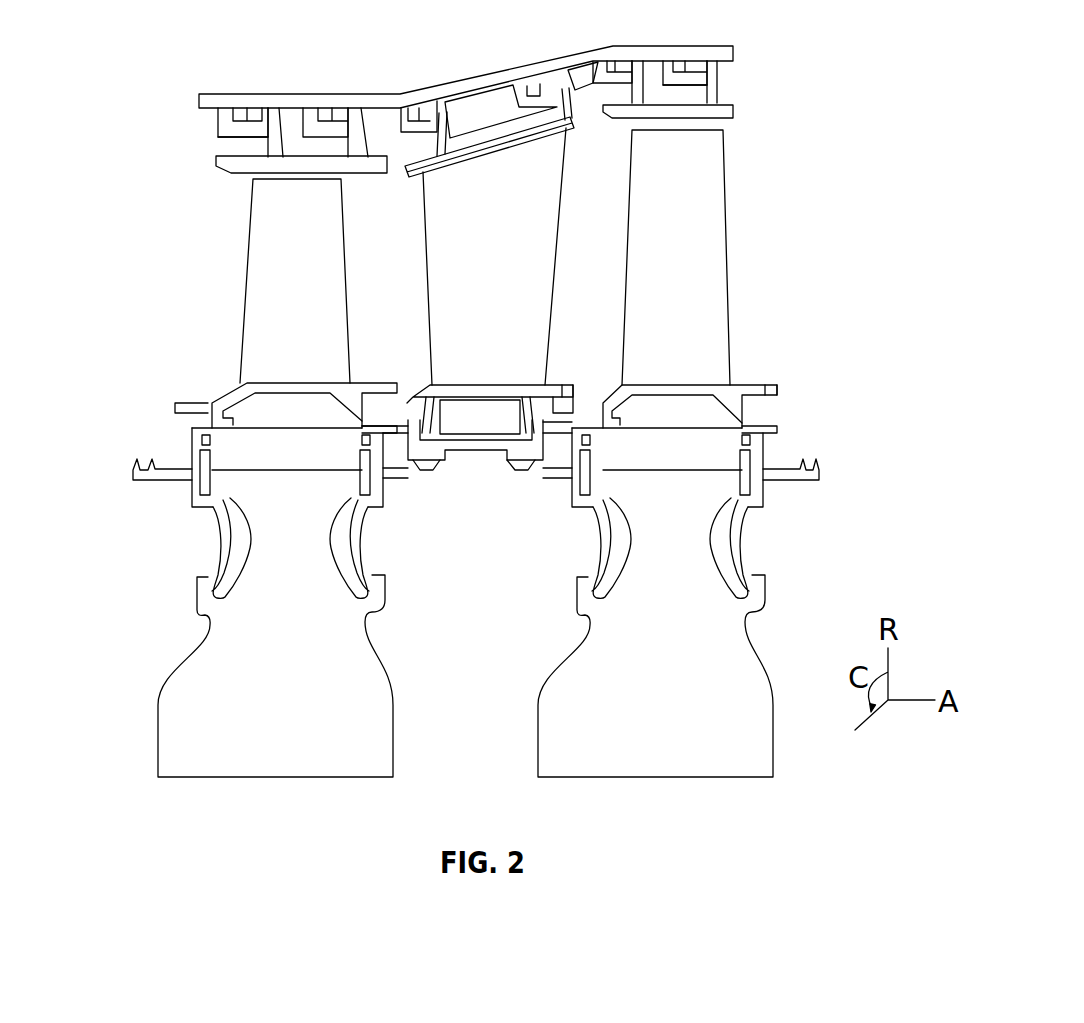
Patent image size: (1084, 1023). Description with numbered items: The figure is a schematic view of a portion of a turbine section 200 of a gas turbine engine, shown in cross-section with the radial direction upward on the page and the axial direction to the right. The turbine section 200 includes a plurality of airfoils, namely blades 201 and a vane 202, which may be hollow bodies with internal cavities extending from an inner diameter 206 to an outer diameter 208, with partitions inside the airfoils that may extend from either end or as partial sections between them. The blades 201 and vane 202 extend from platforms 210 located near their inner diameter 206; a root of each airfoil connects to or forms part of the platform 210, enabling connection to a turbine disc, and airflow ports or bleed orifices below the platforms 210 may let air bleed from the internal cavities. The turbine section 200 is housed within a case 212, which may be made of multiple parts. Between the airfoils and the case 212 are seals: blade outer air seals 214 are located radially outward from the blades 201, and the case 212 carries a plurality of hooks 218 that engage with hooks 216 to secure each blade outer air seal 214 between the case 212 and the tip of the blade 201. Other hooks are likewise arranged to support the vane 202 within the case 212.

The turbine section 200 is at (128, 46).
The blade 201 is at (330, 230).
The vane 202 is at (540, 208).
The inner diameter 206 is at (416, 374).
The outer diameter 208 is at (230, 192).
The platform 210 is at (560, 390).
The case 212 is at (490, 82).
The blade outer air seal 214 is at (285, 162).
The hook 216 is at (273, 128).
The hook 218 is at (214, 115).